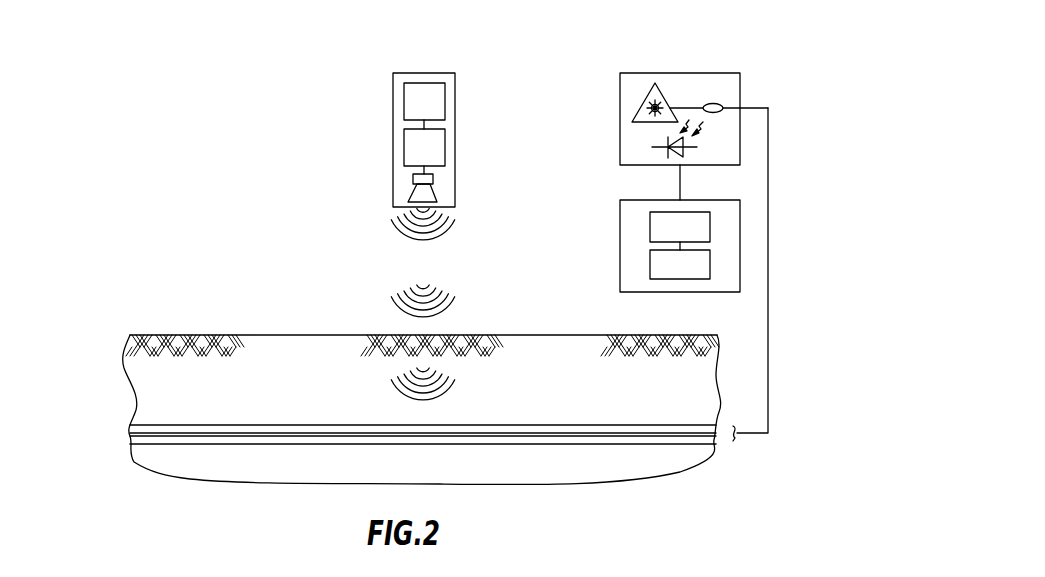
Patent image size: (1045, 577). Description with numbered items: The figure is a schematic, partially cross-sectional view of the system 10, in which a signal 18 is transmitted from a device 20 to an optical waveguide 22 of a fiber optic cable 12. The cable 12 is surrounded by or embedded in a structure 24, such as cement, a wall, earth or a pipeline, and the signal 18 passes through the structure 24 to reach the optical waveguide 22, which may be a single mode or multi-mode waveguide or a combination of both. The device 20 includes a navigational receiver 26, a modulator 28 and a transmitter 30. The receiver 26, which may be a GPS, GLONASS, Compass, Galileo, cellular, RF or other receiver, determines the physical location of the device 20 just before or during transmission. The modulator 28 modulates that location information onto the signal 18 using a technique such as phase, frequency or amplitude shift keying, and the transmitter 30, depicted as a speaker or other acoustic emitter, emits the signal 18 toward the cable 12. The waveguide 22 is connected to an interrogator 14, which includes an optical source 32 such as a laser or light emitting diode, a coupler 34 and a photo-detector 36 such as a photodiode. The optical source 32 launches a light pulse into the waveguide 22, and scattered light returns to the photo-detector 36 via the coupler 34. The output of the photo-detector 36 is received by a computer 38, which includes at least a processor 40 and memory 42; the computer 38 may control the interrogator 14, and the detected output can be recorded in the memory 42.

The system 10 is at (213, 112).
The fiber optic cable 12 is at (163, 422).
The interrogator 14 is at (690, 73).
The signal 18 is at (450, 305).
The device 20 is at (456, 94).
The optical waveguide 22 is at (770, 260).
The structure 24 is at (272, 334).
The navigational receiver 26 is at (404, 97).
The modulator 28 is at (404, 137).
The transmitter 30 is at (413, 190).
The optical source 32 is at (647, 93).
The coupler 34 is at (722, 104).
The photo-detector 36 is at (653, 148).
The computer 38 is at (618, 216).
The processor 40 is at (702, 212).
The memory 42 is at (697, 279).